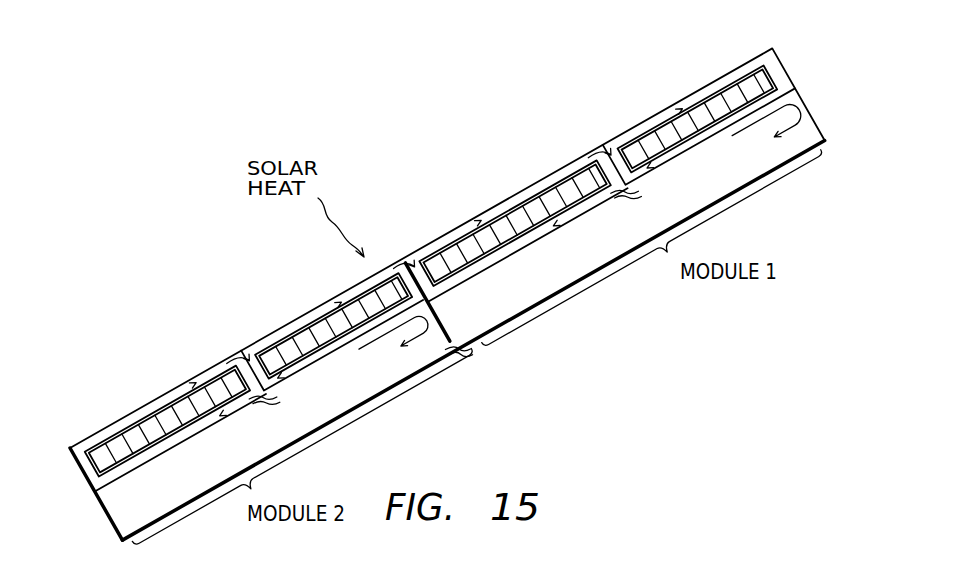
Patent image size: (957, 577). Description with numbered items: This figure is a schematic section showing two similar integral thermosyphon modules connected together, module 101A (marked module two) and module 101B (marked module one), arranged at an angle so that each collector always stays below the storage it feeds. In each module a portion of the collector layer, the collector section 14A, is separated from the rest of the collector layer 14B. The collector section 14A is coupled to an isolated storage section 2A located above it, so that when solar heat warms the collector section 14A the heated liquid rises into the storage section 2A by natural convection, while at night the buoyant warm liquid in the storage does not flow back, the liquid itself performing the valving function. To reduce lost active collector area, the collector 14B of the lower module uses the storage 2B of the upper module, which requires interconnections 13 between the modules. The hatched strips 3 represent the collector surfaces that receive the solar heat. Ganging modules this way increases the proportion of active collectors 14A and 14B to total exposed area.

The storage section 2A is at (750, 165).
The storage 2B is at (582, 265).
The solar collector strip 3 is at (102, 460).
The interconnections 13 is at (418, 266).
The collector section 14A is at (157, 410).
The collector layer portion 14B is at (289, 330).
The module 101A is at (246, 360).
The module 101B is at (600, 150).